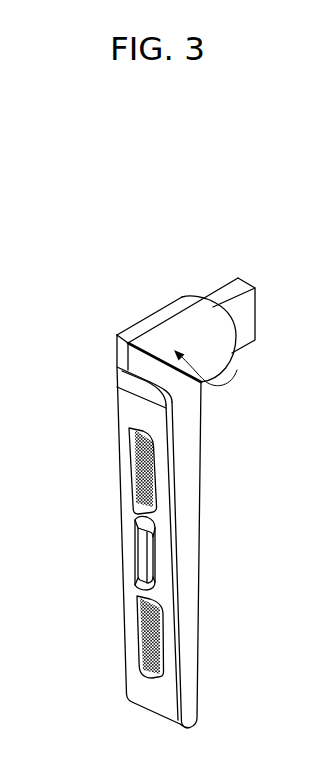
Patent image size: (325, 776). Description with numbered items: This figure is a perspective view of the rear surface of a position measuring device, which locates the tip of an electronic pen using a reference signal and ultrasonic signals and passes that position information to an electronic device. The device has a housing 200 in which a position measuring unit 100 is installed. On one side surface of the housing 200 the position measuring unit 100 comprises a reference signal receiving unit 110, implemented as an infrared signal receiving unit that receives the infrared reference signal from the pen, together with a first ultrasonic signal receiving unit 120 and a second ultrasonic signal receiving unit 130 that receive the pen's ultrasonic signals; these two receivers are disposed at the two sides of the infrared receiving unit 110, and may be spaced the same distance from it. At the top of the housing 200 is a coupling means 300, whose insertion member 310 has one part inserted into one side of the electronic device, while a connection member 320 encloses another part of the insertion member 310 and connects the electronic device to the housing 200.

The position measuring unit 100 is at (57, 656).
The reference signal receiving unit 110 is at (140, 555).
The first ultrasonic signal receiving unit 120 is at (131, 456).
The second ultrasonic signal receiving unit 130 is at (143, 635).
The housing 200 is at (138, 410).
The coupling means 300 is at (220, 231).
The insertion member 310 is at (232, 292).
The connection member 320 is at (173, 331).